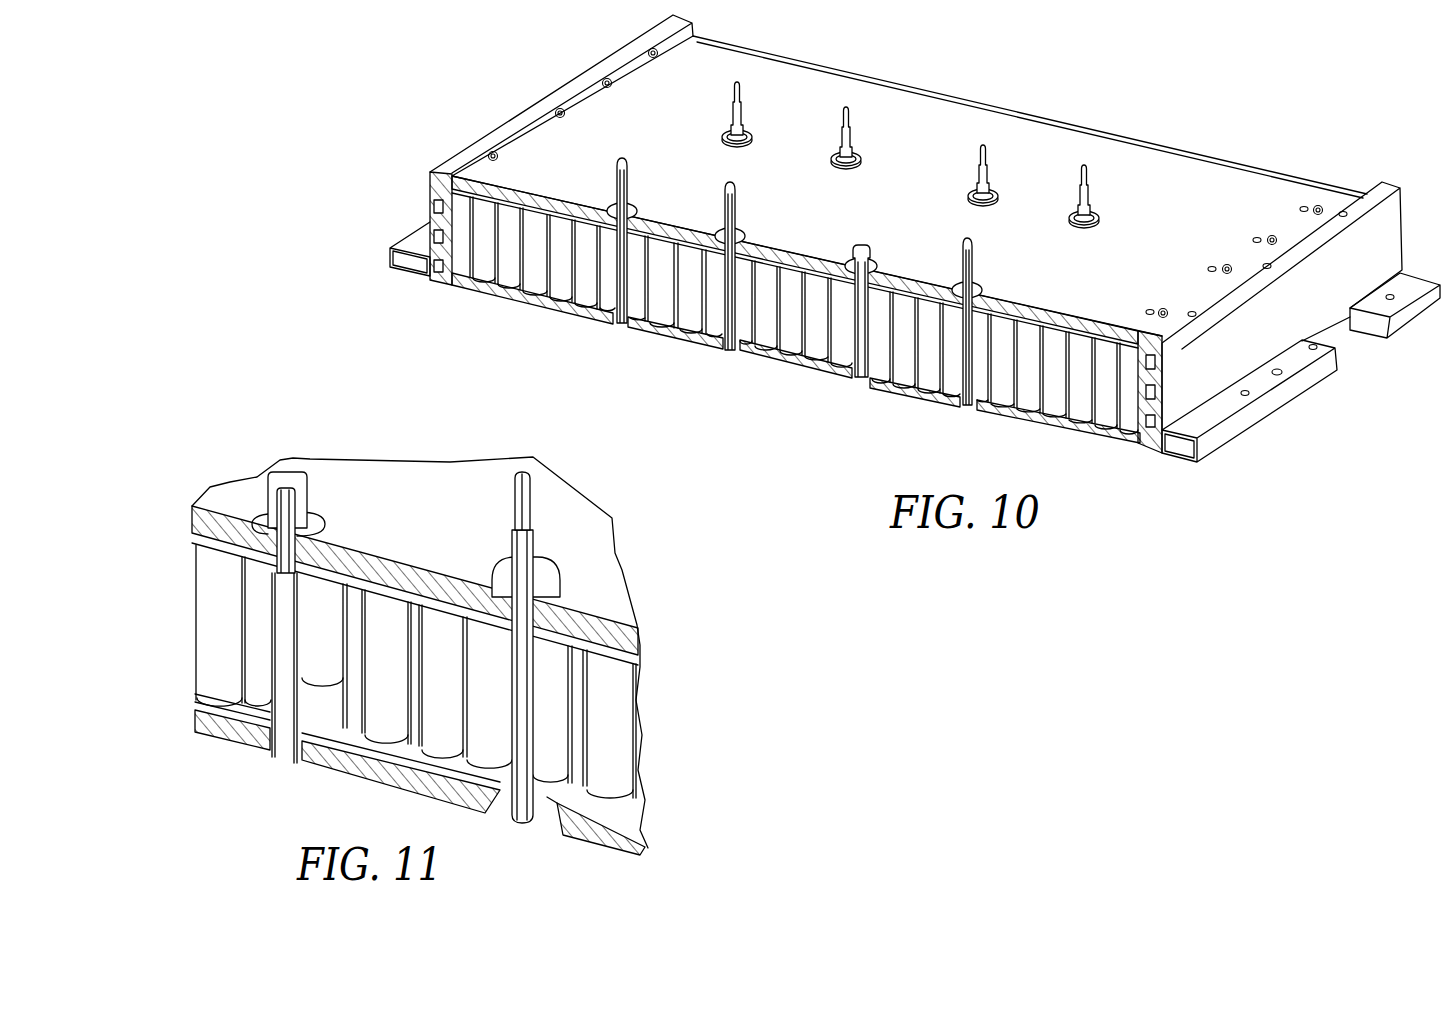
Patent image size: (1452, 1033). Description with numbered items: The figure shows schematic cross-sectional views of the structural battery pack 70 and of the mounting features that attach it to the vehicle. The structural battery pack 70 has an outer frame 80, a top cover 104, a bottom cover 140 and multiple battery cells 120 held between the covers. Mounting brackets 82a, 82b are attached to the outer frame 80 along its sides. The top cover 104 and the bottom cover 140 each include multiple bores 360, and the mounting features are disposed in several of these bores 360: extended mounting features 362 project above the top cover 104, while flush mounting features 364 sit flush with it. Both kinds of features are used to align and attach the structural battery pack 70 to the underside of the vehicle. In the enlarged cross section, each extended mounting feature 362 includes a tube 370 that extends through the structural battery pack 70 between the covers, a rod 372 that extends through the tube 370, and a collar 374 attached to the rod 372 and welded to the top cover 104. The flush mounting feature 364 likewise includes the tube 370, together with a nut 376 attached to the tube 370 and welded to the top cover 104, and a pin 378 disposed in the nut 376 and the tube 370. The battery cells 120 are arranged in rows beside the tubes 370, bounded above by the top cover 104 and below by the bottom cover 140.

In FIG. 10, the structural battery pack 70 is at (1003, 67).
In FIG. 11, the structural battery pack 70 is at (296, 434).
In FIG. 10, the outer frame 80 is at (547, 94).
In FIG. 10, the mounting bracket 82a is at (407, 277).
In FIG. 10, the mounting bracket 82b is at (1217, 447).
In FIG. 10, the top cover 104 is at (1174, 257).
In FIG. 11, the top cover 104 is at (610, 585).
In FIG. 10, the battery cells 120 is at (535, 268).
In FIG. 11, the battery cells 120 is at (207, 682).
In FIG. 11, the bottom cover 140 is at (650, 835).
In FIG. 10, the bores 360 is at (858, 158).
In FIG. 10, the extended mounting feature 362 is at (615, 252).
In FIG. 11, the extended mounting feature 362 is at (533, 502).
In FIG. 10, the flush mounting feature 364 is at (860, 313).
In FIG. 11, the flush mounting feature 364 is at (261, 473).
In FIG. 11, the tube 370 is at (268, 647).
In FIG. 11, the rod 372 is at (513, 504).
In FIG. 11, the collar 374 is at (495, 572).
In FIG. 11, the nut 376 is at (305, 480).
In FIG. 11, the pin 378 is at (302, 535).